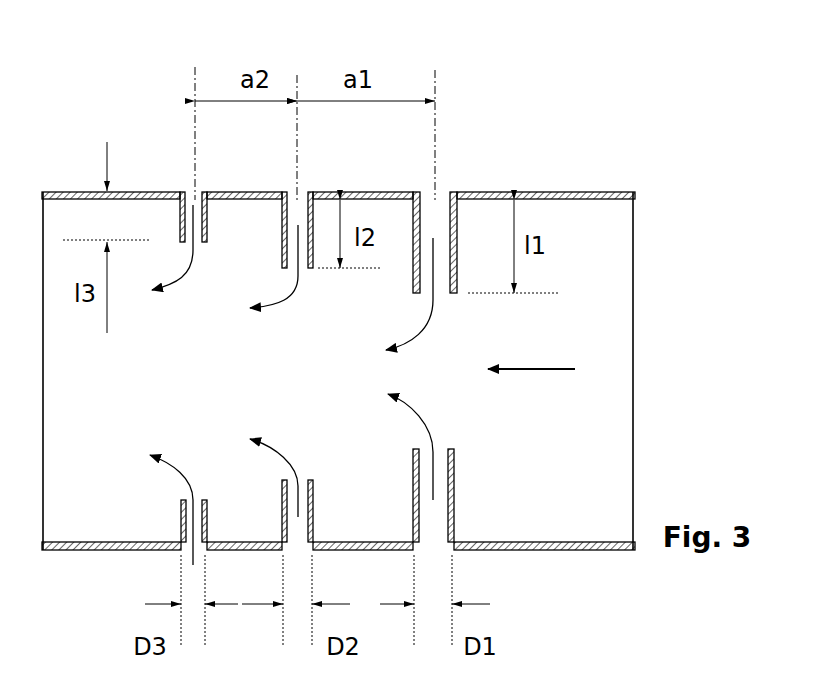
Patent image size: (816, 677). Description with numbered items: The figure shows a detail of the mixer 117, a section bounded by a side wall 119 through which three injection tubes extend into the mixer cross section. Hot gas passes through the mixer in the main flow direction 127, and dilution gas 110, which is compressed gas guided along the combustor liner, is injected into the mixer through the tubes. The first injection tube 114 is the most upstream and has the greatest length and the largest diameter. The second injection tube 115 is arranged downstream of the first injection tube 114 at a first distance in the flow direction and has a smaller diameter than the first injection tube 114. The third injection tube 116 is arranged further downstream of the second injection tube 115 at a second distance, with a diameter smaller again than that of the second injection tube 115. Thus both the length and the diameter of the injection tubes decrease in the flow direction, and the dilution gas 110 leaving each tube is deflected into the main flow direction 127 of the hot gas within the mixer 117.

The dilution gas 110 is at (423, 412).
The first injection tube 114 is at (440, 222).
The second injection tube 115 is at (297, 200).
The third injection tube 116 is at (190, 198).
The mixer 117 is at (176, 377).
The side wall 119 is at (545, 546).
The main flow direction of the hot gases 127 is at (531, 352).